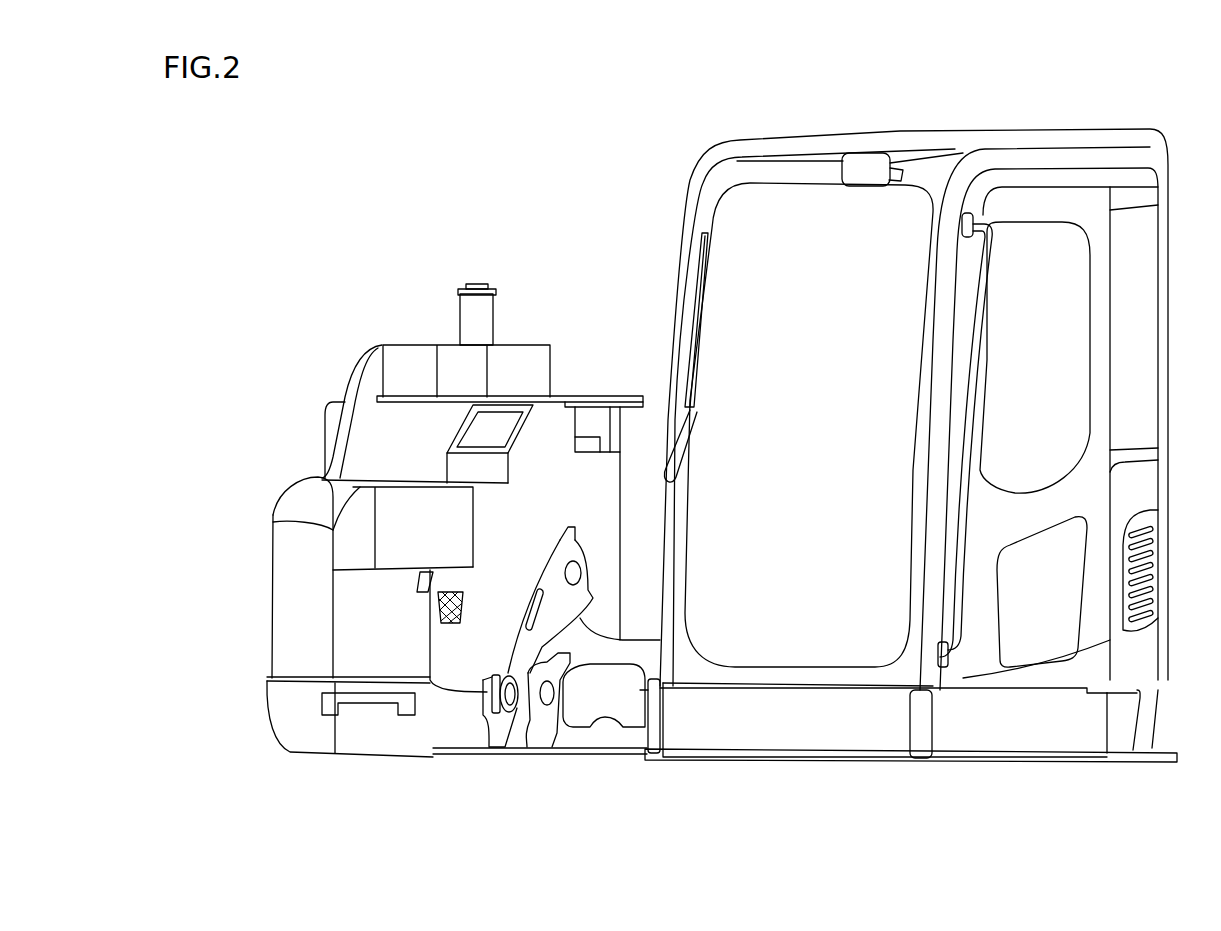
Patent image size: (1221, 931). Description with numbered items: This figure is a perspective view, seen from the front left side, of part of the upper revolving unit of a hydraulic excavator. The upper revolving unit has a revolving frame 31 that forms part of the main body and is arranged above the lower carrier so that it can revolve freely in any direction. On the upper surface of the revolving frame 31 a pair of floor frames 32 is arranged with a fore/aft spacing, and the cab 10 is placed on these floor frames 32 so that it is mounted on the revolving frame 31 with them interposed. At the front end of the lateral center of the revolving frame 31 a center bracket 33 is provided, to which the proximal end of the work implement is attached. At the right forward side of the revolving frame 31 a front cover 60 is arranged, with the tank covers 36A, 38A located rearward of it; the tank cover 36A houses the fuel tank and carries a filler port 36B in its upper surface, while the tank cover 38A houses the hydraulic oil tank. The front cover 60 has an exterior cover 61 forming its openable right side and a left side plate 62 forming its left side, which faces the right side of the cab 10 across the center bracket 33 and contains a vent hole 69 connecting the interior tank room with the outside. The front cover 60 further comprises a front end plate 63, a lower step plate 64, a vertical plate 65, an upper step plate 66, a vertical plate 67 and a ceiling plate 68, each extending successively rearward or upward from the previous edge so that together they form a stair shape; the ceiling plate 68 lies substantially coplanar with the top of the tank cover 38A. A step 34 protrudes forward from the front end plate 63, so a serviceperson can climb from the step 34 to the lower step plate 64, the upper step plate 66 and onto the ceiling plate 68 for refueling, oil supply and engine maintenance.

The cab 10 is at (1152, 124).
The revolving frame 31 is at (750, 757).
The floor frame 32 is at (878, 728).
The center bracket 33 is at (607, 727).
The step 34 is at (360, 702).
The tank cover 36A is at (515, 367).
The filler port 36B is at (473, 320).
The tank cover 38A is at (608, 473).
The front cover 60 is at (323, 378).
The exterior cover 61 is at (298, 620).
The left side plate 62 is at (477, 660).
The front end plate 63 is at (363, 658).
The lower step plate 64 is at (390, 567).
The vertical plate 65 is at (393, 540).
The upper step plate 66 is at (460, 482).
The vertical plate 67 is at (395, 430).
The ceiling plate 68 is at (530, 402).
The vent hole 69 is at (453, 613).